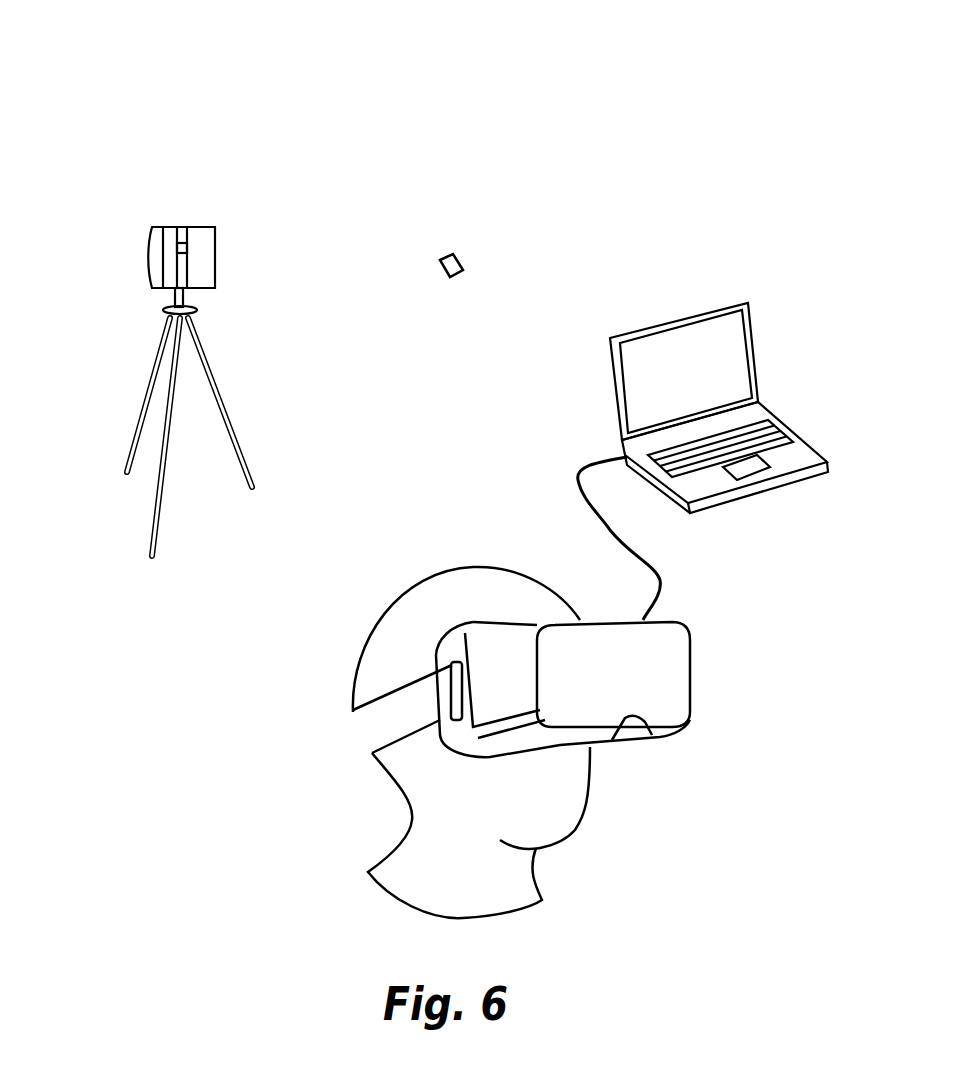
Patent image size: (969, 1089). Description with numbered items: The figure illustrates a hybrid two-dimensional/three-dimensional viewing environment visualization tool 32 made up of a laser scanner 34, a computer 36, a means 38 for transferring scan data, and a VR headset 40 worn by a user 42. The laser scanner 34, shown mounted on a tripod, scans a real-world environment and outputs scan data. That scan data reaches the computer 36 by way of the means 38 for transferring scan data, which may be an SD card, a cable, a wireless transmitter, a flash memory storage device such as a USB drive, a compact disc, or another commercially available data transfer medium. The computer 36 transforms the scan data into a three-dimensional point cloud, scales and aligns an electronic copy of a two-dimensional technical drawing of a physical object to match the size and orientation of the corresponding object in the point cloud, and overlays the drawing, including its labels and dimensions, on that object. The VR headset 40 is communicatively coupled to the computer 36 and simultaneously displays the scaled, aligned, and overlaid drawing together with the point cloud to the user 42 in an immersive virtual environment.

The hybrid 2D/3D viewing environment visualization tool 32 is at (132, 82).
The laser scanner 34 is at (215, 223).
The computer 36 is at (682, 317).
The means for transferring scan data 38 is at (462, 260).
The VR headset 40 is at (690, 657).
The user 42 is at (457, 565).